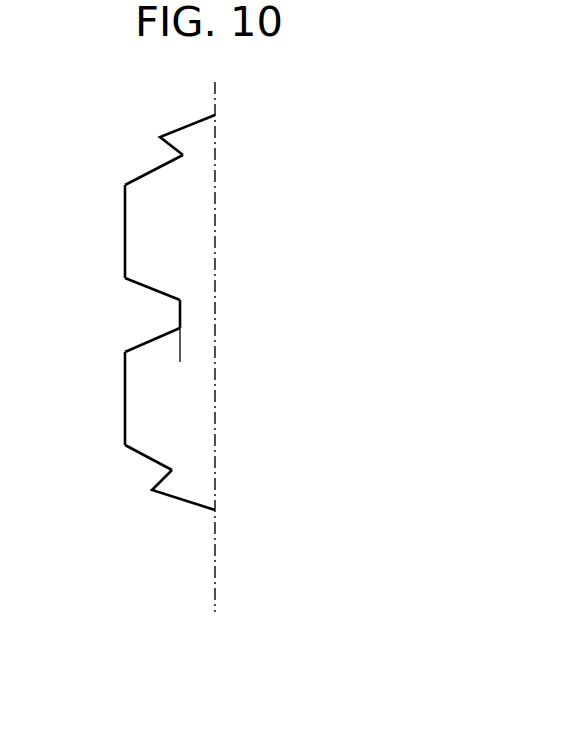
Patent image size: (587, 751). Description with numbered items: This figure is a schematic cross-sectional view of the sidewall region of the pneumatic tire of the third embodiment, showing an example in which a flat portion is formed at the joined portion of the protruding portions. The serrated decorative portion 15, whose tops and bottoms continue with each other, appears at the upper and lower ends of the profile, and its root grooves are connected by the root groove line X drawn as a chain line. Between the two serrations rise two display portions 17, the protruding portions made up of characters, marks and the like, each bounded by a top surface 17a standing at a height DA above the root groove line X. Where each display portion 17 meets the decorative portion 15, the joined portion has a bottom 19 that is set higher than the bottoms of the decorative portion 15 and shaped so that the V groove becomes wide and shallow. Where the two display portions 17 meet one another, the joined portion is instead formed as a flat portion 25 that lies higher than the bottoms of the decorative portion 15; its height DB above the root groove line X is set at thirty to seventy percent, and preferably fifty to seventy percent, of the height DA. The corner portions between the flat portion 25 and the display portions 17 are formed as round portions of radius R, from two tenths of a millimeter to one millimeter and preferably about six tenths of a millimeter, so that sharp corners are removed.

The decorative portion 15 is at (198, 138).
The bottoms of joined portions 19 is at (187, 157).
The display portion 17 is at (141, 272).
The top surface of display portion 17a is at (125, 237).
The flat portion 25 is at (182, 308).
The root groove line X is at (218, 88).
The height to top surfaces of display portions DA is at (212, 238).
The height of flat portion DB is at (181, 349).
The radius of round portions R is at (176, 326).